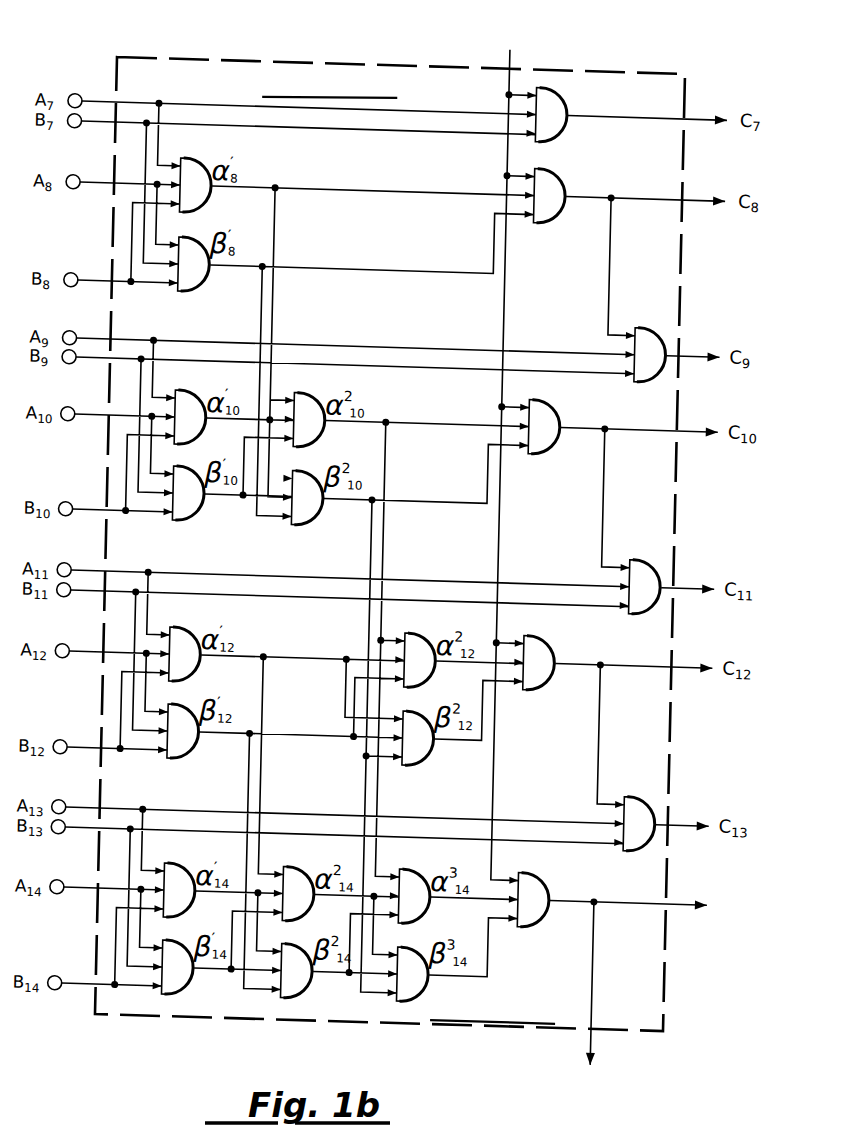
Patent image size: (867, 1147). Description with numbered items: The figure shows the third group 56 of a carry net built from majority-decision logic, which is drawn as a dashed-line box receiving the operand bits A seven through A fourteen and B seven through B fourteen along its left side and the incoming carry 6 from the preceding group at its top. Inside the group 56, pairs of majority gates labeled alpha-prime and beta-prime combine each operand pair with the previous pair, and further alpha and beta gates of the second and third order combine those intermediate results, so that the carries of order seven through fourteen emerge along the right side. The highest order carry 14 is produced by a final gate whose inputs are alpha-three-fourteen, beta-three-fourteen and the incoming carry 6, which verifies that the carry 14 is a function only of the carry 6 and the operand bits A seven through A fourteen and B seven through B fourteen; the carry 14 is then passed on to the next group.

The third group of carry logic 56 is at (284, 56).
The carry input C6 from Fig. 1a 6 is at (498, 440).
The carry output C14 to Fig. 1c 14 is at (645, 1008).